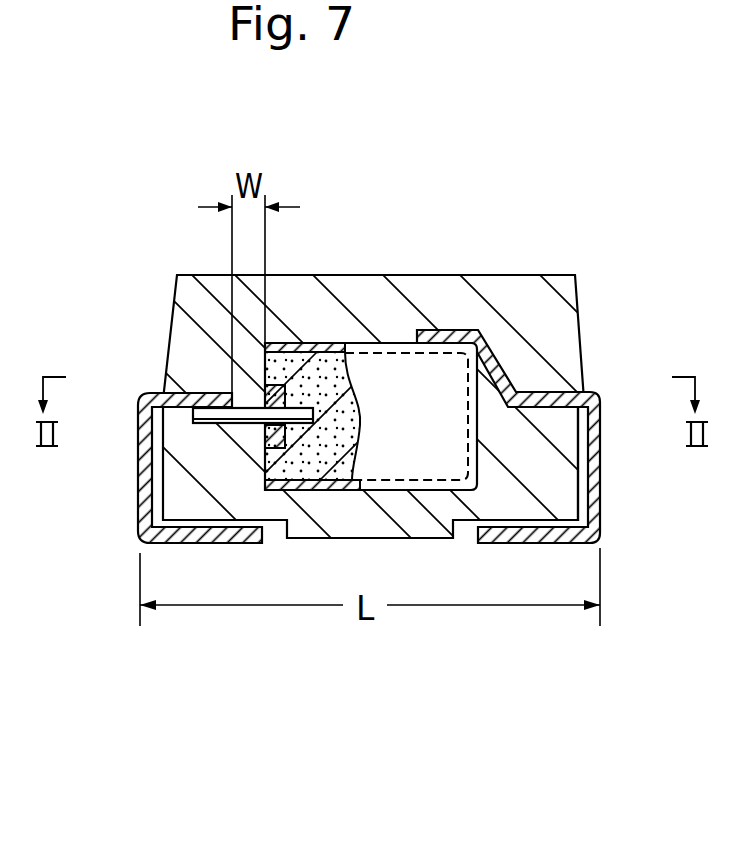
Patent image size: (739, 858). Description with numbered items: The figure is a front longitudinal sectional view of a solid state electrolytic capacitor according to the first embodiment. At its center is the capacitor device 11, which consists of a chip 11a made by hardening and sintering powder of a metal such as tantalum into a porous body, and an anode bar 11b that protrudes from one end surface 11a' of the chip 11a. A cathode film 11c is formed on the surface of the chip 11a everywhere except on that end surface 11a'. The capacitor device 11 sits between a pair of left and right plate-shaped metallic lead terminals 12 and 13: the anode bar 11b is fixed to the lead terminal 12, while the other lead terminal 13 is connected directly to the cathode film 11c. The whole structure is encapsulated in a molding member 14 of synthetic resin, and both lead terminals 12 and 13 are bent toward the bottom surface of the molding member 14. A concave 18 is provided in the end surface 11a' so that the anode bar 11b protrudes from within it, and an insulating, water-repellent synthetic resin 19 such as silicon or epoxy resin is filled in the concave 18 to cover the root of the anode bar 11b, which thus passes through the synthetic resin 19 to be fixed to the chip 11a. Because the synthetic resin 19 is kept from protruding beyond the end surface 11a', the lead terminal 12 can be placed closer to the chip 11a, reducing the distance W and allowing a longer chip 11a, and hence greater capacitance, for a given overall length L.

The capacitor device 11 is at (388, 380).
The chip 11a is at (345, 343).
The end surface 11a' is at (184, 302).
The anode bar 11b is at (213, 416).
The cathode film 11c is at (292, 343).
The lead terminal 12 is at (143, 394).
The lead terminal 13 is at (603, 437).
The molding member 14 is at (520, 275).
The concave 18 is at (270, 438).
The synthetic resin 19 is at (262, 383).